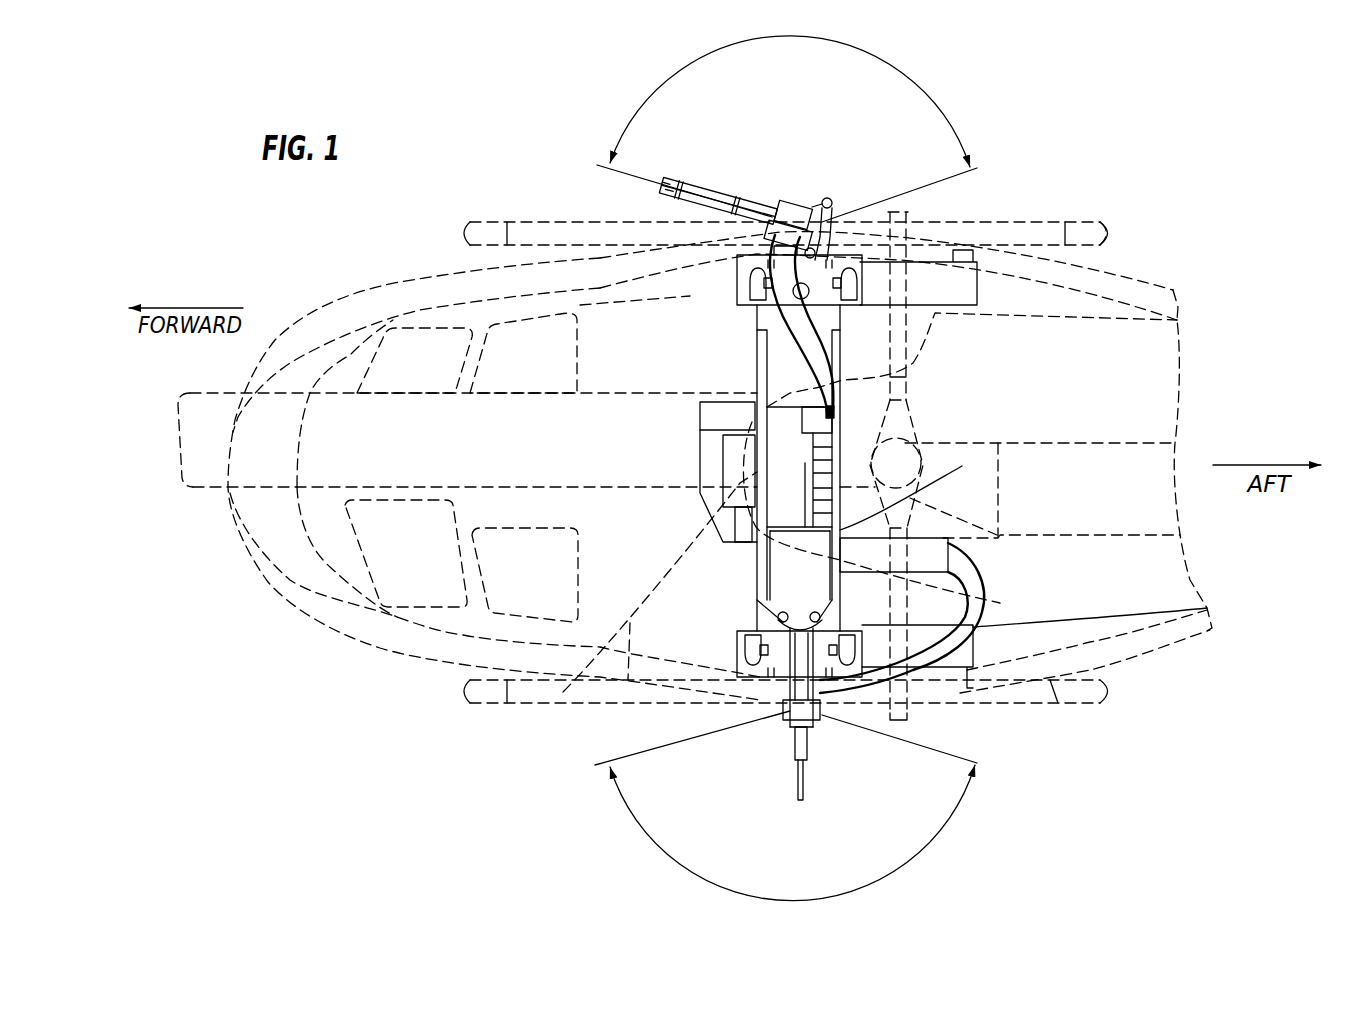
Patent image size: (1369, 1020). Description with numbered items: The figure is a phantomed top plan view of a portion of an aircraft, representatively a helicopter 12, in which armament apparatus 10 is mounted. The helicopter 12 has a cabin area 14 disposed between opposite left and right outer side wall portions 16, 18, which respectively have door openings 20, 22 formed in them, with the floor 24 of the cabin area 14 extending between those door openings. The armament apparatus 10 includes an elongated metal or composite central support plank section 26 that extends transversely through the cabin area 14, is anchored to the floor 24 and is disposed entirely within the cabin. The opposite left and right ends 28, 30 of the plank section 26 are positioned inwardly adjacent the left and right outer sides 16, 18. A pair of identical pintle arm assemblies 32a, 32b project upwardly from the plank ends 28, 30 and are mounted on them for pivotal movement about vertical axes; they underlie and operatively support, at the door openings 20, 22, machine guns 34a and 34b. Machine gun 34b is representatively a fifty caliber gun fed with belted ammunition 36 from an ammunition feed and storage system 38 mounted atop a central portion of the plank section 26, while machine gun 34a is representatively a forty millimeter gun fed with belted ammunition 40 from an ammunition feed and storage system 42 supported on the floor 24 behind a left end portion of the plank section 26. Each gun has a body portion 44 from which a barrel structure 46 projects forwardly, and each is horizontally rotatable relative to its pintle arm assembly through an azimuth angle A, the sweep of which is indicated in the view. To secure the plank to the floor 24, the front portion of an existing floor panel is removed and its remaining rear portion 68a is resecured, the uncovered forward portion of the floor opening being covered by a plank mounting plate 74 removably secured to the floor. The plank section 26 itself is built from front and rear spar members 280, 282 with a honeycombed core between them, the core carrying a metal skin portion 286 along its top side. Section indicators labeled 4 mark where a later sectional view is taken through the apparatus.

The armament apparatus 10 is at (725, 347).
The helicopter 12 is at (283, 607).
The cabin area 14 is at (585, 665).
The left outer side wall portion 16 is at (1055, 683).
The right outer side wall portion 18 is at (1065, 255).
The door opening 20 is at (957, 697).
The door opening 22 is at (962, 223).
The floor 24 is at (690, 387).
The central support plank section 26 is at (845, 374).
The left end 28 is at (752, 615).
The right end 30 is at (755, 324).
The pintle arm assembly 32a is at (763, 692).
The pintle arm assembly 32b is at (815, 258).
The machine gun 34a is at (822, 740).
The machine gun 34b is at (740, 170).
The belted ammunition 36 is at (813, 353).
The ammunition feed and storage system 38 is at (780, 502).
The belted ammunition 40 is at (983, 587).
The ammunition feed and storage system 42 is at (945, 533).
The body portion 44 is at (797, 198).
The barrel structure 46 is at (678, 170).
The rear portion of floor panel 68a is at (960, 290).
The plank mounting plate 74 is at (735, 280).
The front spar member 280 is at (757, 555).
The rear spar member 282 is at (923, 466).
The metal skin portion 286 is at (781, 590).
The section line 4- 4 is at (705, 595).
The azimuth angle A is at (935, 98).